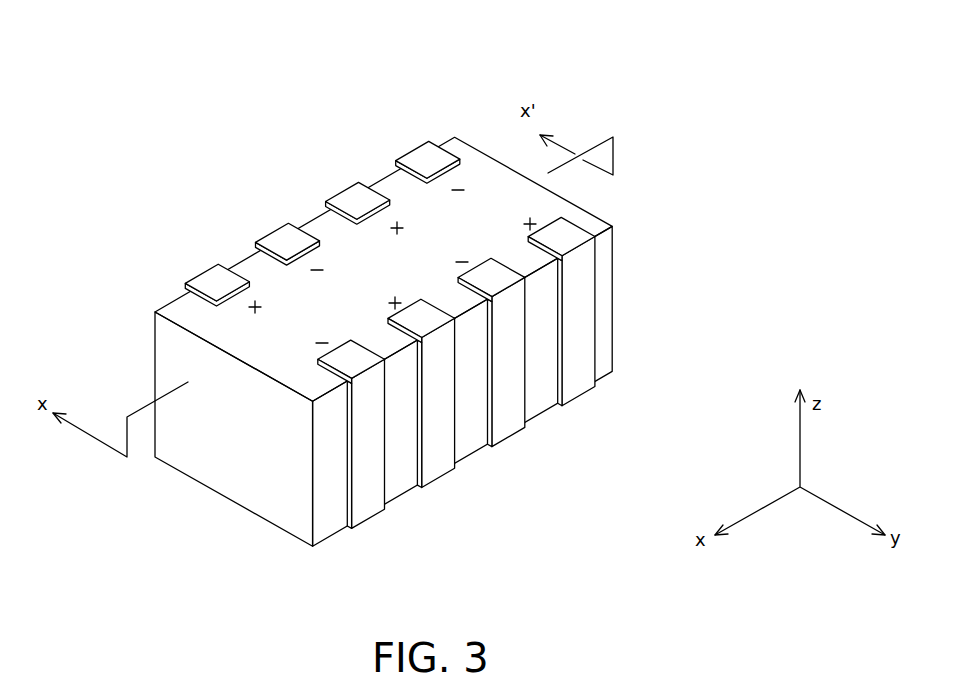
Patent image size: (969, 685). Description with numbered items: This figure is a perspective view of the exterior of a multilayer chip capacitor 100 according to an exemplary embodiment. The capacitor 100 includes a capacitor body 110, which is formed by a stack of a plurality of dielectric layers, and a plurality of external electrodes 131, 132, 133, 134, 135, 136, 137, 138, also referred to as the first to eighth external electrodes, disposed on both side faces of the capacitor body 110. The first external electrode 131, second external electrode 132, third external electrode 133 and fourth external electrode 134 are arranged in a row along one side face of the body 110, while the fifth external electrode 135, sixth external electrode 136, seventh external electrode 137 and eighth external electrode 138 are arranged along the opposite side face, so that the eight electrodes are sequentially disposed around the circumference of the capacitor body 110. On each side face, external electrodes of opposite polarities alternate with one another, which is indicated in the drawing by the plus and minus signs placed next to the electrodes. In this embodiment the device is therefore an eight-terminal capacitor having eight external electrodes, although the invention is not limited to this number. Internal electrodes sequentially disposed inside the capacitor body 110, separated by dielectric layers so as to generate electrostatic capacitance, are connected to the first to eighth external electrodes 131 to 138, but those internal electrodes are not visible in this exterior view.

The multilayer chip capacitor 100 is at (403, 290).
The capacitor body 110 is at (575, 215).
The first external electrode 131 is at (212, 280).
The second external electrode 132 is at (282, 240).
The third external electrode 133 is at (352, 198).
The fourth external electrode 134 is at (423, 158).
The fifth external electrode 135 is at (575, 390).
The sixth external electrode 136 is at (505, 430).
The seventh external electrode 137 is at (435, 472).
The eighth external electrode 138 is at (368, 510).